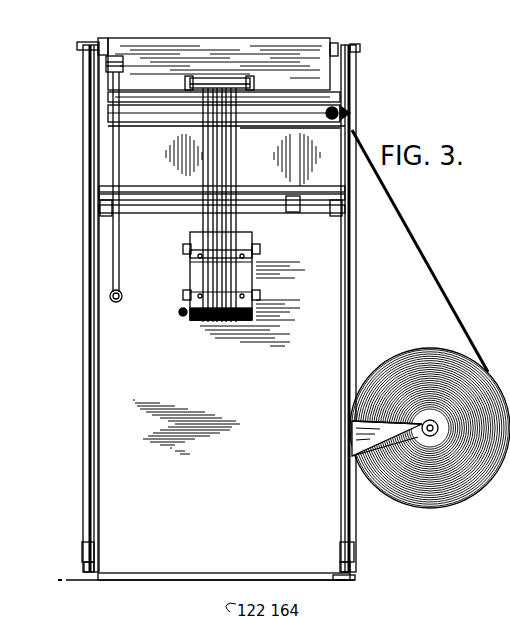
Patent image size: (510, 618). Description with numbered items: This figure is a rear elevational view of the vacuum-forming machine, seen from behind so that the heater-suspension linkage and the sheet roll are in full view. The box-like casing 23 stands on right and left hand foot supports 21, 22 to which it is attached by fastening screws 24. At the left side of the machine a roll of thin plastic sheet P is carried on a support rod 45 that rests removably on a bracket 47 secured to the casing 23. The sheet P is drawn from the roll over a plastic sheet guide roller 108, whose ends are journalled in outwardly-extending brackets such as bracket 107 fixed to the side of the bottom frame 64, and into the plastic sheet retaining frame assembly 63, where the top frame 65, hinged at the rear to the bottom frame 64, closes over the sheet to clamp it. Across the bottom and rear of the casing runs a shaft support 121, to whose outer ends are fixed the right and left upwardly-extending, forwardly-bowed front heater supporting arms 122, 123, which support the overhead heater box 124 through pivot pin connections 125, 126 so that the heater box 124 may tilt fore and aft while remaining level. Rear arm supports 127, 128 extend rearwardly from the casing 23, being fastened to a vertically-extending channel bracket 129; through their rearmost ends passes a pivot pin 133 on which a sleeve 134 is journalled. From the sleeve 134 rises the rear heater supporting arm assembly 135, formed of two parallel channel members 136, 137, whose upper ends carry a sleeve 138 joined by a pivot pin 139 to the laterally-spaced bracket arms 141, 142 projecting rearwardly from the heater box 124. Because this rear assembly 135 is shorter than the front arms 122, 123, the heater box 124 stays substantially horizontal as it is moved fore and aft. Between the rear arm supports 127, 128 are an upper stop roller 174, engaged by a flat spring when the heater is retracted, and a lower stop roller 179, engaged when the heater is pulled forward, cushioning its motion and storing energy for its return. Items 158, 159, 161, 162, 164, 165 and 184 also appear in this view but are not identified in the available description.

The right hand foot support 21 is at (352, 578).
The left hand foot support 22 is at (86, 572).
The box-like casing 23 is at (150, 560).
The fastening screws 24 is at (352, 572).
The support rod 45 is at (430, 420).
The bracket 47 is at (368, 445).
The plastic sheet retaining frame assembly 63 is at (190, 120).
The bottom frame 64 is at (291, 159).
The top frame 65 is at (262, 100).
The bracket 107 is at (352, 114).
The plastic sheet guide roller 108 is at (336, 106).
The shaft support 121 is at (356, 555).
The front heater supporting arm 122 is at (86, 330).
The front heater supporting arm 123 is at (361, 326).
The heater box 124 is at (137, 38).
The pivot pin connection 125 is at (85, 46).
The pivot pin connection 126 is at (358, 49).
The rear arm support 127 is at (186, 282).
The rear arm support 128 is at (258, 282).
The channel bracket 129 is at (200, 273).
The pivot pin 133 is at (178, 314).
The sleeve 134 is at (197, 322).
The rear heater supporting arm assembly 135 is at (238, 229).
The channel member 136 is at (205, 176).
The channel member 137 is at (232, 145).
The sleeve 138 is at (206, 76).
The pivot pin 139 is at (258, 88).
The bracket arm 141 is at (190, 82).
The bracket arm 142 is at (248, 76).
The vertical rod 158 is at (119, 250).
The top tube 159 is at (108, 30).
The inner post line 161 is at (96, 117).
The panel rail 162 is at (300, 192).
The lower rail left end 164 is at (100, 207).
The lower rail right end 165 is at (347, 214).
The upper stop roller 174 is at (240, 258).
The lower stop roller 179 is at (218, 324).
The rail bracket 184 is at (293, 200).
The plastic sheet P is at (437, 250).